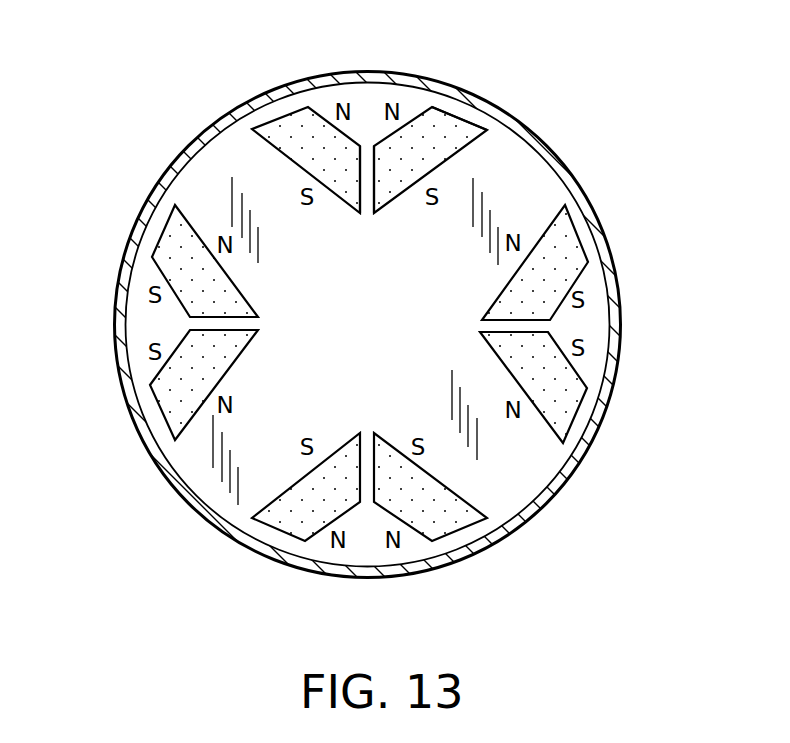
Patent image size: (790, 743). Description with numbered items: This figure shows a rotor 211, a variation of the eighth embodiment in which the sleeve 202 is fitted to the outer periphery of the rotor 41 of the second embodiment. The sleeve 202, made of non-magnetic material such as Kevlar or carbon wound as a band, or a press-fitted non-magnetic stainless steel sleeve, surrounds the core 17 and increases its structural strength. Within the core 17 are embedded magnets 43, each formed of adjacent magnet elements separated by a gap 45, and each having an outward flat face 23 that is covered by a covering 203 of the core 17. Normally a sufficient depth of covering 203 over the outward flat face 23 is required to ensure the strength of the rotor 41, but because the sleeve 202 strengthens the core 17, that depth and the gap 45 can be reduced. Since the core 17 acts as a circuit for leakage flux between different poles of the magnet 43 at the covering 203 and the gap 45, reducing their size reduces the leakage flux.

The core 17 is at (207, 178).
The sleeve 202 is at (133, 238).
The magnet 43 is at (288, 127).
The gap 45 is at (366, 158).
The outward flat face 23 is at (447, 110).
The covering 203 is at (467, 115).
The rotor 211 is at (395, 371).
The rotor 41 is at (522, 475).